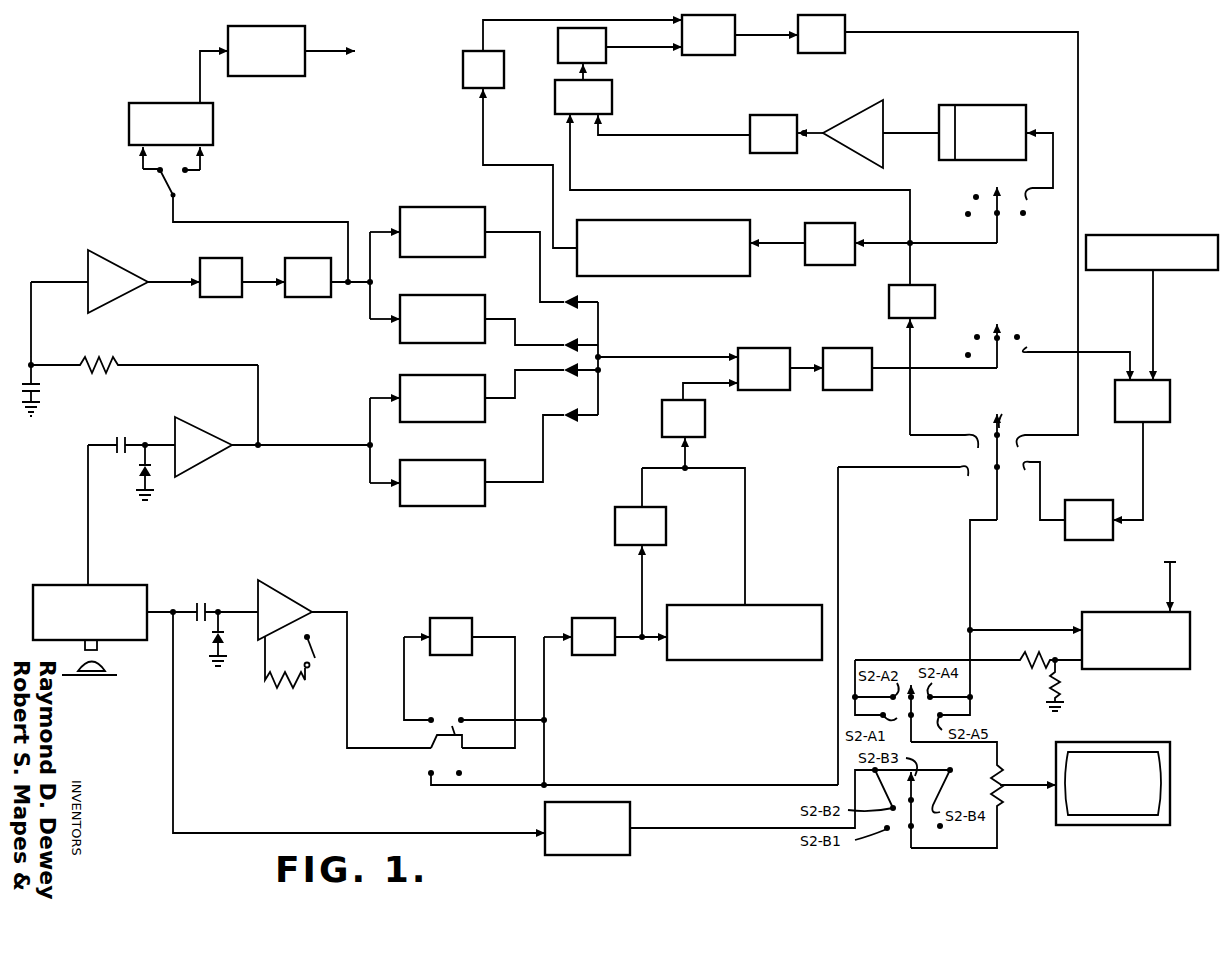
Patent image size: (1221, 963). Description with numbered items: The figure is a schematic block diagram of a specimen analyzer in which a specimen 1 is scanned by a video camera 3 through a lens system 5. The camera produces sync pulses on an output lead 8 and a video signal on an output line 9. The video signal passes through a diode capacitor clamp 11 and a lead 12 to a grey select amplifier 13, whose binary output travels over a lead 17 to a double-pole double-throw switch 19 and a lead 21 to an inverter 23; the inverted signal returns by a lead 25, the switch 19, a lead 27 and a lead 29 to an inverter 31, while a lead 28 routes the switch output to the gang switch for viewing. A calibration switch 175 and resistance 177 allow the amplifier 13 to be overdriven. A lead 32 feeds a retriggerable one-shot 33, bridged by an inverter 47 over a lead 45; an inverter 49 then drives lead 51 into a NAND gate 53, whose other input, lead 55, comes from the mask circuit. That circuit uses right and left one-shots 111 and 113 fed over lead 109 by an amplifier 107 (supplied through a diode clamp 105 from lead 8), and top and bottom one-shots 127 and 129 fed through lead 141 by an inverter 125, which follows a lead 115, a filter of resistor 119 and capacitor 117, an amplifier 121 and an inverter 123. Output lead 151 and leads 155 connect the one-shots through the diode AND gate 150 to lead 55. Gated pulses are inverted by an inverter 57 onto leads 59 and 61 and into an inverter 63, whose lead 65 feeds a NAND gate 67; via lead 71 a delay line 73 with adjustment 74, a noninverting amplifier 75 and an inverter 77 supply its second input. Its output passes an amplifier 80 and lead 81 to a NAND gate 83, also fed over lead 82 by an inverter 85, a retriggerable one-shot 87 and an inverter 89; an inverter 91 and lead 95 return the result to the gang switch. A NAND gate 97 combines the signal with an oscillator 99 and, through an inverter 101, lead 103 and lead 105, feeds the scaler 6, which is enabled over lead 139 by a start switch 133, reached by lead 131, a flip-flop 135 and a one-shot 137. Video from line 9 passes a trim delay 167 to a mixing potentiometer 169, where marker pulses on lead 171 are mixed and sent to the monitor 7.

The specimen 1 is at (117, 675).
The video camera 3 is at (119, 585).
The lens system 5 is at (105, 666).
The scaler 6 is at (1104, 612).
The television monitor 7 is at (1113, 745).
The sync output lead 8 is at (92, 549).
The video output line 9 is at (160, 612).
The diode capacitor clamp 11 is at (198, 645).
The coupling capacitor line 12 is at (240, 610).
The amplifier 13 is at (296, 592).
The lead 17 is at (349, 657).
The double-pole double-throw switch 19 is at (491, 772).
The lead 21 is at (405, 682).
The inverter 23 is at (449, 618).
The lead 25 is at (515, 695).
The lead 27 is at (530, 722).
The lead 28 is at (838, 688).
The lead 29 is at (546, 682).
The inverter 31 is at (603, 617).
The line 32 is at (651, 641).
The retriggerable one-shot multivibrator 33 is at (752, 605).
The line 45 is at (745, 525).
The inverter 47 is at (666, 531).
The inverter 49 is at (705, 420).
The lead 51 is at (718, 383).
The NAND gate 53 is at (758, 350).
The lead 55 is at (648, 357).
The inverter 57 is at (830, 348).
The lead 59 is at (935, 370).
The lead 61 is at (910, 410).
The inverter 63 is at (935, 300).
The lead 65 is at (910, 205).
The NAND gate 67 is at (612, 96).
The lead 71 is at (1036, 133).
The delay line 73 is at (974, 105).
The variable adjustment 74 is at (939, 117).
The noninverting amplifier 75 is at (876, 107).
The inverter 77 is at (778, 115).
The inverter 80 is at (558, 50).
The lead 81 is at (624, 50).
The line 82 is at (486, 22).
The NAND gate 83 is at (730, 56).
The inverter 85 is at (828, 222).
The retriggerable one-shot 87 is at (708, 220).
The inverter 89 is at (475, 88).
The inverter 91 is at (818, 54).
The line 95 is at (1005, 32).
The NAND gate 97 is at (1137, 424).
The oscillator 99 is at (1172, 272).
The inverter 101 is at (1093, 500).
The lead 103 is at (972, 585).
The count pulse input lead 105 is at (130, 477).
The amplifier 107 is at (192, 420).
The lead 109 is at (283, 447).
The right mask control one-shot 111 is at (487, 405).
The left mask control one-shot 113 is at (487, 472).
The lead 115 is at (180, 364).
The capacitor 117 is at (42, 388).
The resistor 119 is at (101, 360).
The amplifier 121 is at (104, 257).
The inverter 123 is at (213, 258).
The inverter 125 is at (294, 258).
The top mask control one-shot 127 is at (486, 218).
The bottom mask control one-shot 129 is at (487, 310).
The lead 131 is at (291, 222).
The push button start switch 133 is at (223, 197).
The flip-flop 135 is at (129, 145).
The one-shot multivibrator 137 is at (283, 76).
The lead 139 is at (330, 50).
The line 141 is at (360, 284).
The diode AND gate 150 is at (651, 385).
The output lead 151 is at (500, 321).
The diode 155 is at (533, 237).
The trim delay 167 is at (632, 816).
The mixing potentiometer 169 is at (1001, 792).
The lead 171 is at (1060, 656).
The switch 175 is at (325, 641).
The resistance 177 is at (290, 690).